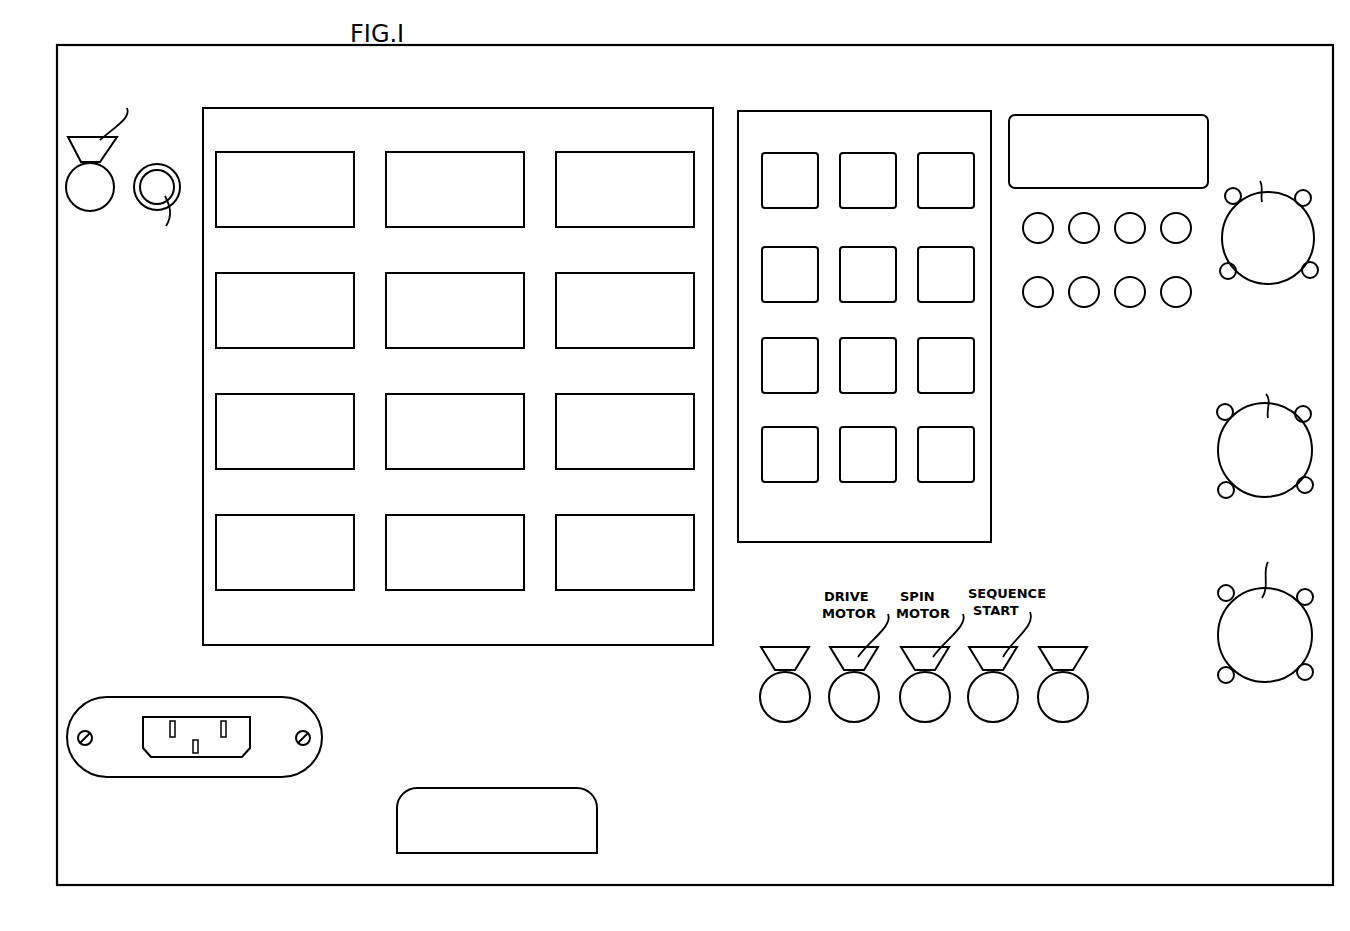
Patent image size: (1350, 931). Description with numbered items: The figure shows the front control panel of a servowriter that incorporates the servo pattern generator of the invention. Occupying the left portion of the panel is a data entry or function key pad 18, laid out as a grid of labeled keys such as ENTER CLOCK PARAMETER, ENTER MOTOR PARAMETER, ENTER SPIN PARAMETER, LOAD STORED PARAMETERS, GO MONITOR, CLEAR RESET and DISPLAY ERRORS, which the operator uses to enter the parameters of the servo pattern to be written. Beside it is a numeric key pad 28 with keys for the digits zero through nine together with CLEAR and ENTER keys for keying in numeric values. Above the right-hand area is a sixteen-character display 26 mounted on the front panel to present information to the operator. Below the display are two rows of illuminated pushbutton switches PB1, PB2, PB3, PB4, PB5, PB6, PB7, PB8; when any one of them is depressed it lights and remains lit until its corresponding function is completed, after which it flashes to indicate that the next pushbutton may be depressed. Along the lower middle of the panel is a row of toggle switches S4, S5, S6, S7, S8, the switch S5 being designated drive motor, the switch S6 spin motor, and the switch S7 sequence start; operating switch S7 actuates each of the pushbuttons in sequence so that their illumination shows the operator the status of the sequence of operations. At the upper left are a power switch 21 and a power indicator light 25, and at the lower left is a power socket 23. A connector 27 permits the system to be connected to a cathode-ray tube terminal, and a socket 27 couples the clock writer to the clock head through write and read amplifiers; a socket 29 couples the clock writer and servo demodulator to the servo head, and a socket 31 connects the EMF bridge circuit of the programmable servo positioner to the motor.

The function key pad 18 is at (452, 122).
The numeric key pad 28 is at (842, 128).
The 16-character display 26 is at (1107, 123).
The connector 27 is at (1276, 206).
The socket 29 is at (1222, 451).
The socket 31 is at (1233, 618).
The power switch 21 is at (92, 198).
The power indicator light 25 is at (156, 177).
The power socket 23 is at (211, 746).
The switch S4 is at (770, 694).
The toggle switch S5 is at (862, 712).
The toggle switch S6 is at (924, 708).
The toggle switch S7 is at (992, 708).
The toggle switch S8 is at (1062, 708).
The illuminated pushbutton switch PB1 is at (1036, 228).
The illuminated pushbutton switch PB2 is at (1097, 202).
The illuminated pushbutton switch PB3 is at (1144, 202).
The illuminated pushbutton switch PB4 is at (1199, 202).
The illuminated pushbutton switch PB5 is at (1044, 294).
The illuminated pushbutton switch PB6 is at (1090, 294).
The illuminated pushbutton switch PB7 is at (1138, 294).
The illuminated pushbutton switch PB8 is at (1178, 294).